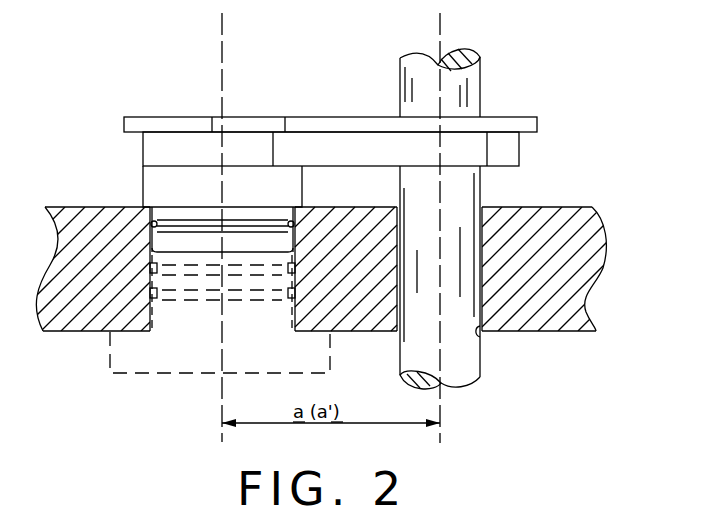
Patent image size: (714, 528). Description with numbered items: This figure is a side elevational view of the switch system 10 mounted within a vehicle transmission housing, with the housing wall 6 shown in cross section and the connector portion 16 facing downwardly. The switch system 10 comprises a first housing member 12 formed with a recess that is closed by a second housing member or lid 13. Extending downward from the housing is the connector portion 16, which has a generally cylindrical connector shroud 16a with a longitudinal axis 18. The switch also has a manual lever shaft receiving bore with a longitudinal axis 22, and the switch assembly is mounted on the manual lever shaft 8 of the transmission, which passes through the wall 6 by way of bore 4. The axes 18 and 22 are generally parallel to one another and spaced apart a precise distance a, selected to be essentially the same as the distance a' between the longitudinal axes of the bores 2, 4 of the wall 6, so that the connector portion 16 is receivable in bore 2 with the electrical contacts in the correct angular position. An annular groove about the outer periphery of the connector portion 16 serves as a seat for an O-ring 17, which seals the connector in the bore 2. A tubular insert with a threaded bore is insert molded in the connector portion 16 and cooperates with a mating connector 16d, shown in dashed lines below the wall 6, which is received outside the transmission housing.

The switch system 10 is at (364, 122).
The longitudinal axis 18 is at (222, 13).
The longitudinal axis 22 is at (437, 43).
The manual lever shaft 8 is at (479, 70).
The second housing member or lid 13 is at (376, 119).
The first housing member 12 is at (520, 152).
The connector portion 16 is at (190, 213).
The connector shroud 16a is at (203, 197).
The O-ring 17 is at (293, 218).
The bore 2 is at (150, 312).
The mating connector 16d is at (175, 377).
The bore 4 is at (477, 333).
The wall 6 is at (539, 322).